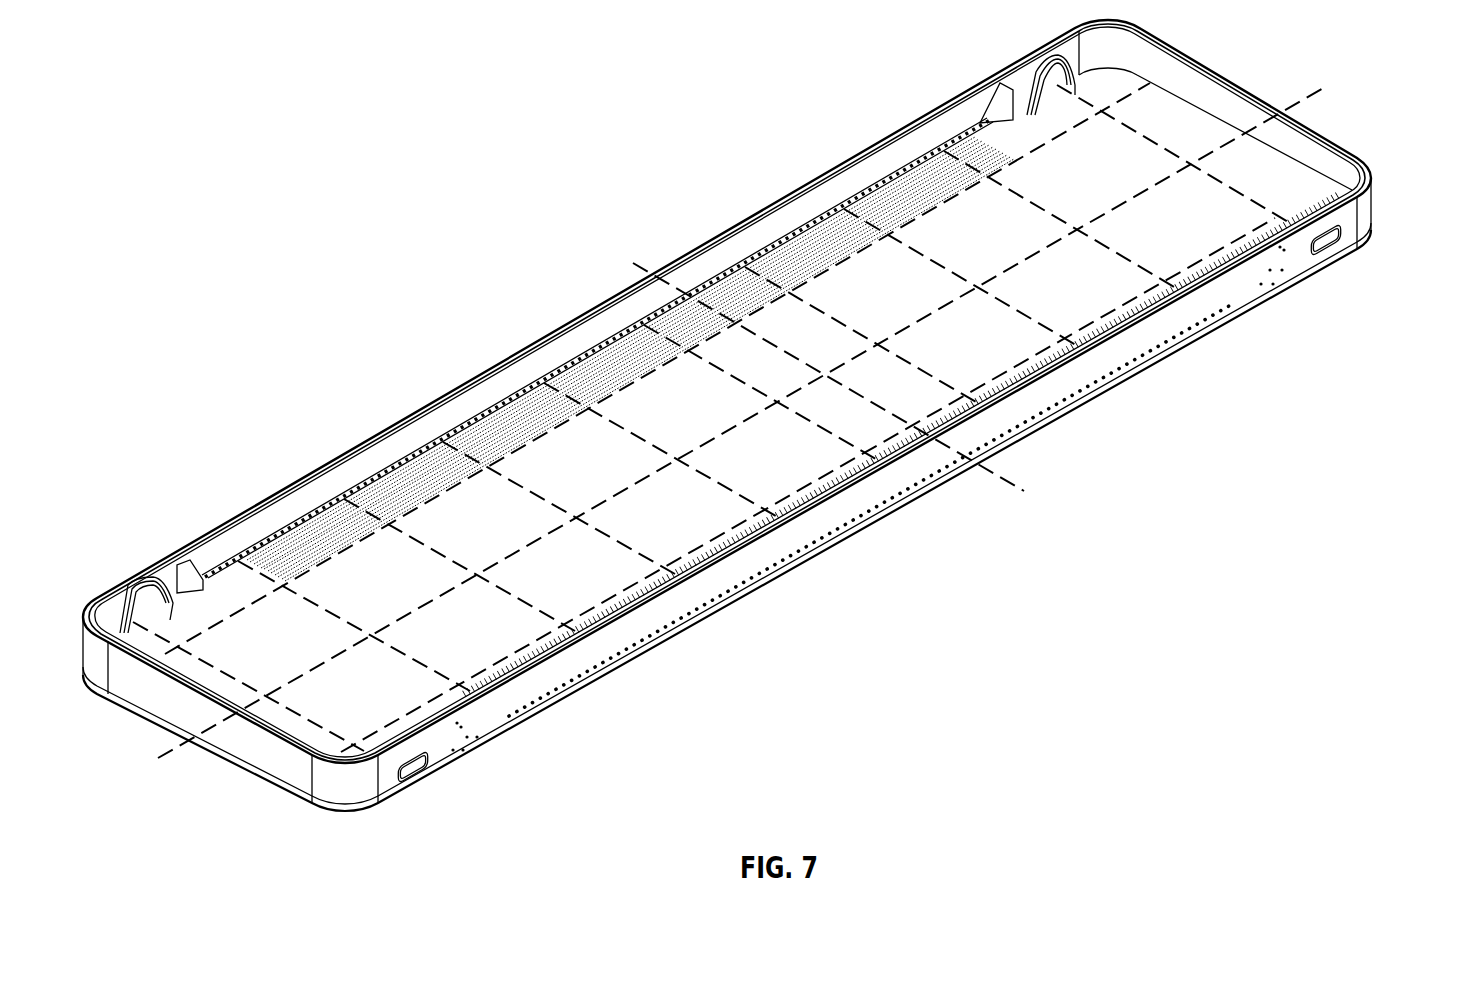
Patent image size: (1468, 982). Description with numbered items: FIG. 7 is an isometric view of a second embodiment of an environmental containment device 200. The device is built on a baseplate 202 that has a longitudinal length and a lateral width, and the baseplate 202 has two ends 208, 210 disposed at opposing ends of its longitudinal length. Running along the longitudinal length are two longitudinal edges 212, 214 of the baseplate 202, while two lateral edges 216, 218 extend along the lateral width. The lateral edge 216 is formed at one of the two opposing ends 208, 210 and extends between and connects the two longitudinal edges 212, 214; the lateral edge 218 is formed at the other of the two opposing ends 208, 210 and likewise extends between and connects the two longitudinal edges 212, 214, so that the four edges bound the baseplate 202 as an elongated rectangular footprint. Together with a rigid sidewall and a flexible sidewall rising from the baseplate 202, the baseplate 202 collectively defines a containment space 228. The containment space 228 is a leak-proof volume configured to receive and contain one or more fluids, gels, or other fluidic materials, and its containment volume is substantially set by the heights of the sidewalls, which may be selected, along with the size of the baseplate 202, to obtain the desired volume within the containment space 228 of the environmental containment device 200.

The environmental containment device 200 is at (259, 246).
The baseplate 202 is at (997, 367).
The end 208 is at (306, 831).
The end 210 is at (1357, 271).
The longitudinal edge 212 is at (732, 604).
The longitudinal edge 214 is at (393, 477).
The lateral edge 216 is at (333, 812).
The lateral edge 218 is at (1373, 212).
The containment space 228 is at (703, 497).